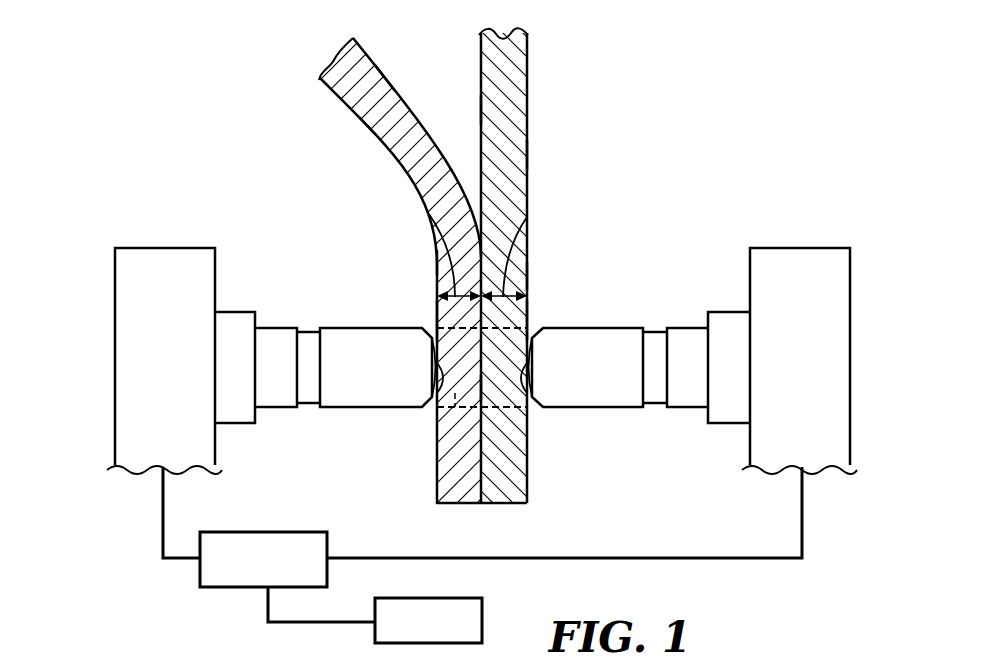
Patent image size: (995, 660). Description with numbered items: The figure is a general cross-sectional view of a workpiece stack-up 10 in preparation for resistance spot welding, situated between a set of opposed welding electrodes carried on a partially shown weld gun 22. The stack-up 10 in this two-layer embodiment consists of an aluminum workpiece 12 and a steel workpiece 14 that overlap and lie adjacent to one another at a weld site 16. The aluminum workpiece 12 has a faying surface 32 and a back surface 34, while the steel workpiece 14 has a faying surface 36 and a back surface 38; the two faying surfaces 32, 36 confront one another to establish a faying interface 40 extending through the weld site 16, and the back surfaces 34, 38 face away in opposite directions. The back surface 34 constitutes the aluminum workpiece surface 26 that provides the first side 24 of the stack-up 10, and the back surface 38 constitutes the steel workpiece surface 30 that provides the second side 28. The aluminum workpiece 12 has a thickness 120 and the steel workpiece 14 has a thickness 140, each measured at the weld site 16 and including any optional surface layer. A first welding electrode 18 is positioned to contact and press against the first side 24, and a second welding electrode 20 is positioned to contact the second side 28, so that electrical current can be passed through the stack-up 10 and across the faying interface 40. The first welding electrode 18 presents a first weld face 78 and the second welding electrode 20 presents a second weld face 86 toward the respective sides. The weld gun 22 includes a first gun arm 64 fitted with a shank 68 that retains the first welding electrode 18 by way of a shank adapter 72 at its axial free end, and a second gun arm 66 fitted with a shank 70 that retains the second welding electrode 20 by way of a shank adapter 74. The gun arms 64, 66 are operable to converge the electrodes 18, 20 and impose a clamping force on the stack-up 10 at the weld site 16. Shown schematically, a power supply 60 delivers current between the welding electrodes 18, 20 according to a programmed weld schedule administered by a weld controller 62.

The workpiece stack-up 10 is at (497, 330).
The aluminum workpiece 12 is at (352, 87).
The steel workpiece 14 is at (507, 92).
The weld site 16 is at (455, 400).
The first welding electrode 18 is at (335, 362).
The second welding electrode 20 is at (622, 371).
The weld gun 22 is at (445, 330).
The first side 24 is at (428, 317).
The aluminum workpiece surface 26 is at (430, 262).
The second side 28 is at (536, 318).
The steel workpiece surface 30 is at (532, 275).
The faying surface 32 is at (385, 76).
The back surface 34 is at (367, 127).
The faying surface 36 is at (480, 108).
The back surface 38 is at (530, 155).
The faying interface 40 is at (519, 400).
The power supply 60 is at (482, 527).
The weld controller 62 is at (375, 615).
The first gun arm 64 is at (167, 265).
The second gun arm 66 is at (798, 267).
The shank 68 is at (272, 348).
The shank 70 is at (681, 347).
The shank adapter 72 is at (313, 348).
The shank adapter 74 is at (653, 347).
The first weld face 78 is at (442, 393).
The second weld face 86 is at (494, 392).
The thickness 120 is at (415, 207).
The thickness 140 is at (530, 223).